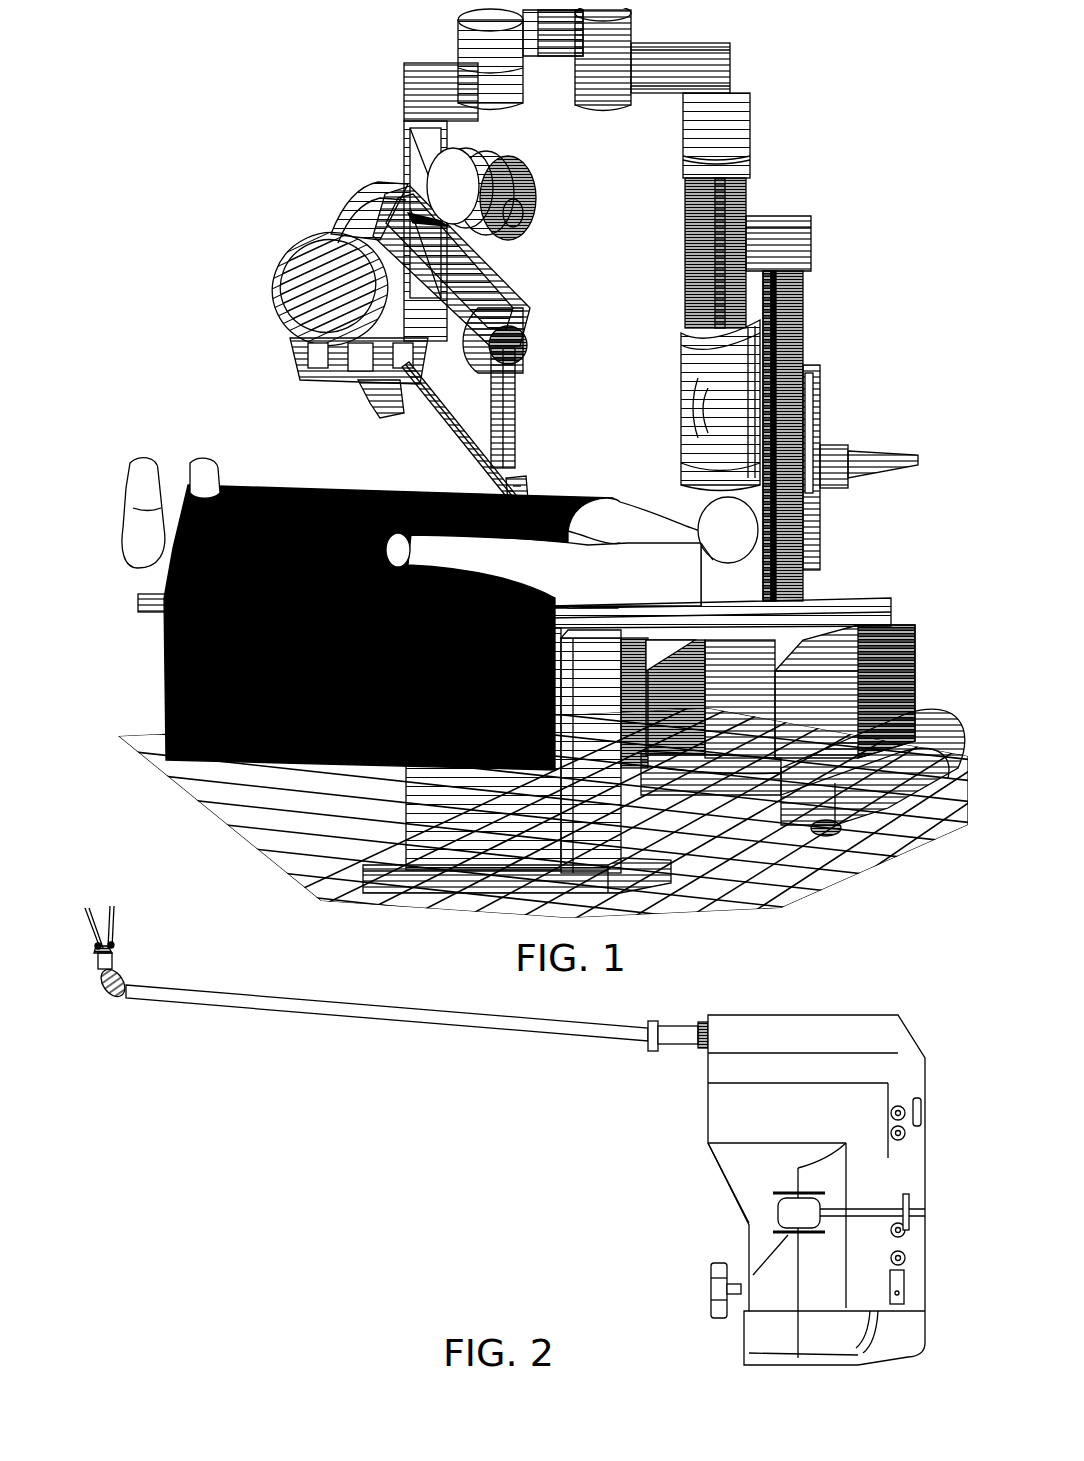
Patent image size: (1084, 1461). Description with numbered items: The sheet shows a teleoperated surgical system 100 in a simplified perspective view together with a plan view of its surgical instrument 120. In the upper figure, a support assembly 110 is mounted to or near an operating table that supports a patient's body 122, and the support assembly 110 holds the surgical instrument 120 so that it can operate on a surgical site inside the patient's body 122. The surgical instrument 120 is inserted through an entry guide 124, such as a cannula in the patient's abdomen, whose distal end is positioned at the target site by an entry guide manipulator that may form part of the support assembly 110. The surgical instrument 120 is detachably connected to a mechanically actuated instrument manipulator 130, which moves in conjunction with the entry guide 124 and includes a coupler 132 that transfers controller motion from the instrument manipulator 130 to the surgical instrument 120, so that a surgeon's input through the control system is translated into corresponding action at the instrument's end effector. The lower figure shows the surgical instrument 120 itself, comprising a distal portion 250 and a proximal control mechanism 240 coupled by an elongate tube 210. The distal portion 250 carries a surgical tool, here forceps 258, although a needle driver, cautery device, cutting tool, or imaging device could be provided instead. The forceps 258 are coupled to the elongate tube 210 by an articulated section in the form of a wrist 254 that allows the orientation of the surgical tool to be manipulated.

In FIG. 1, the teleoperated surgical system 100 is at (240, 352).
In FIG. 1, the support assembly 110 is at (392, 303).
In FIG. 1, the surgical instrument 120 is at (485, 432).
In FIG. 2, the surgical instrument 120 is at (400, 1195).
In FIG. 1, the patient's body 122 is at (637, 477).
In FIG. 1, the entry guide 124 is at (512, 490).
In FIG. 1, the instrument manipulator 130 is at (362, 334).
In FIG. 1, the coupler 132 is at (387, 372).
In FIG. 2, the elongate tube 210 is at (415, 1002).
In FIG. 2, the proximal control mechanism 240 is at (790, 1007).
In FIG. 2, the distal portion 250 is at (489, 1129).
In FIG. 2, the wrist 254 is at (122, 983).
In FIG. 2, the forceps 258 is at (99, 916).